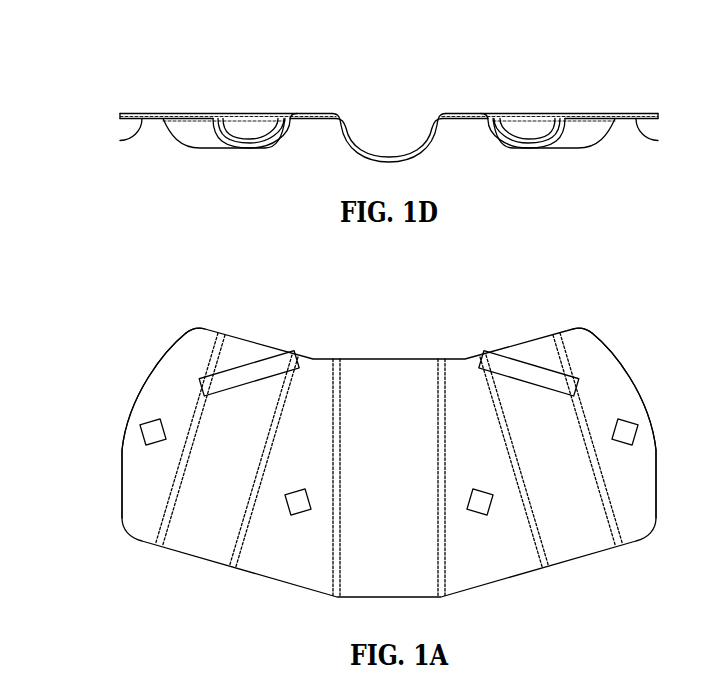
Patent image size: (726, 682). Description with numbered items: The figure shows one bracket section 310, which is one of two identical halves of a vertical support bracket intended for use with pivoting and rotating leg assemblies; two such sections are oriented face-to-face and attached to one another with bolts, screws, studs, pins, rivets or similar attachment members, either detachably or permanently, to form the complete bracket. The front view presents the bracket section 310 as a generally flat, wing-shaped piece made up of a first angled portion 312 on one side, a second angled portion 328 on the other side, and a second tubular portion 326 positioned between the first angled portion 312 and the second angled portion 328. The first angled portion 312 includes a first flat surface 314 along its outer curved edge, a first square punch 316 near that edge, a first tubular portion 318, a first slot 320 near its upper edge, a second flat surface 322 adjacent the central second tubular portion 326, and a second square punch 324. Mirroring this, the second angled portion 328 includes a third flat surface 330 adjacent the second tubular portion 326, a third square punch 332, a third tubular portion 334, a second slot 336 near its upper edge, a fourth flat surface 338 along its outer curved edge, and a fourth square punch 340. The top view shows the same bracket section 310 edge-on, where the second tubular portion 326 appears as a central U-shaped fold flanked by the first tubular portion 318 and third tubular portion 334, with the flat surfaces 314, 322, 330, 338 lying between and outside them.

In FIG. 1D, the bracket section 310 is at (163, 75).
In FIG. 1A, the bracket section 310 is at (136, 326).
In FIG. 1A, the first angled portion 312 is at (193, 322).
In FIG. 1D, the first flat surface 314 is at (138, 121).
In FIG. 1A, the first flat surface 314 is at (132, 495).
In FIG. 1A, the first square punch 316 is at (145, 422).
In FIG. 1D, the first tubular portion 318 is at (207, 149).
In FIG. 1A, the first tubular portion 318 is at (238, 484).
In FIG. 1A, the first slot 320 is at (247, 358).
In FIG. 1D, the second flat surface 322 is at (308, 113).
In FIG. 1A, the second flat surface 322 is at (285, 558).
In FIG. 1A, the second square punch 324 is at (303, 487).
In FIG. 1D, the second tubular portion 326 is at (387, 158).
In FIG. 1A, the second tubular portion 326 is at (408, 453).
In FIG. 1A, the second angled portion 328 is at (585, 320).
In FIG. 1D, the third flat surface 330 is at (463, 113).
In FIG. 1A, the third flat surface 330 is at (497, 560).
In FIG. 1A, the third square punch 332 is at (477, 488).
In FIG. 1D, the third tubular portion 334 is at (567, 150).
In FIG. 1A, the third tubular portion 334 is at (578, 480).
In FIG. 1A, the second slot 336 is at (527, 363).
In FIG. 1D, the fourth flat surface 338 is at (631, 113).
In FIG. 1A, the fourth flat surface 338 is at (610, 373).
In FIG. 1A, the fourth square punch 340 is at (630, 440).